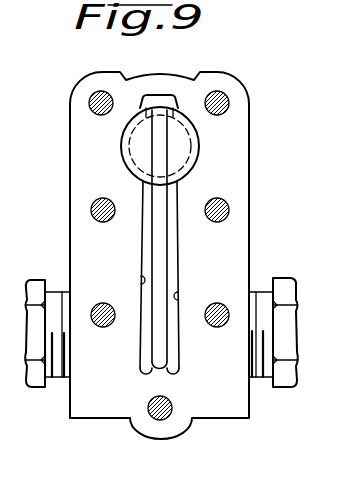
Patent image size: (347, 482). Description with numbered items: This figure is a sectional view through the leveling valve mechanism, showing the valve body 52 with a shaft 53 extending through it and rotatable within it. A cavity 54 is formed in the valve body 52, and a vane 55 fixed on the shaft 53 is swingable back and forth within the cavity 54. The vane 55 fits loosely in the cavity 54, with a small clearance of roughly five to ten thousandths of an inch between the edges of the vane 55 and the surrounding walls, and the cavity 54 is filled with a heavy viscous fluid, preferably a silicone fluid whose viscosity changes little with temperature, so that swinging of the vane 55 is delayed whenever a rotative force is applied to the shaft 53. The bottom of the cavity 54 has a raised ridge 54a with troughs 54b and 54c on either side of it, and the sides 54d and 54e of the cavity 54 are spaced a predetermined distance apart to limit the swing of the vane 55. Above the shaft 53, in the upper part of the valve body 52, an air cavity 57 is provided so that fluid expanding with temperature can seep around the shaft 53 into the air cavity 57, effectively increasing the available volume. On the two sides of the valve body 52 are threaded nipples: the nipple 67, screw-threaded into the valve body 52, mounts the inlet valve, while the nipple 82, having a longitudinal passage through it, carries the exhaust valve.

The valve body 52 is at (97, 416).
The shaft 53 is at (193, 145).
The cavity 54 is at (173, 236).
The raised ridge 54a is at (161, 366).
The trough 54b is at (139, 369).
The trough 54c is at (182, 367).
The side of the cavity 54d is at (141, 280).
The side of the cavity 54e is at (178, 296).
The vane 55 is at (158, 253).
The air cavity 57 is at (163, 98).
The nipple 67 is at (285, 284).
The nipple 82 is at (36, 284).